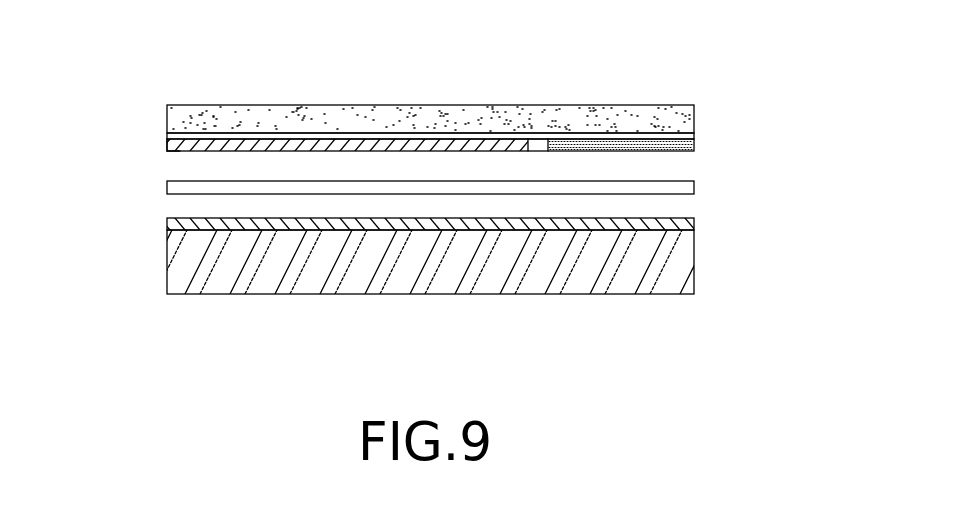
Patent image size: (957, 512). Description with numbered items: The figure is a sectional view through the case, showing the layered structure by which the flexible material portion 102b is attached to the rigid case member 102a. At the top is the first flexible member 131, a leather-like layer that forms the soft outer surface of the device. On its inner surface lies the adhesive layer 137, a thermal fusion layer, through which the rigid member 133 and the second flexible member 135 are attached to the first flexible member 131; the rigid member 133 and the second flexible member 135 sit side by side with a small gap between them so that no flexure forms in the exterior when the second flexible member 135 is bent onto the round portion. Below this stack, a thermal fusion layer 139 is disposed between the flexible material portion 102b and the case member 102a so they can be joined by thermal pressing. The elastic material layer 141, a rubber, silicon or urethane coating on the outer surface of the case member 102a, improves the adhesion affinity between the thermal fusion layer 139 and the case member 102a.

The flexible material portion 102b is at (650, 63).
The case member 102a is at (688, 263).
The first flexible member 131 is at (682, 122).
The rigid member 133 is at (170, 147).
The second flexible member 135 is at (685, 145).
The adhesive layer 137 is at (695, 137).
The thermal fusion layer 139 is at (167, 187).
The elastic material layer 141 is at (690, 223).